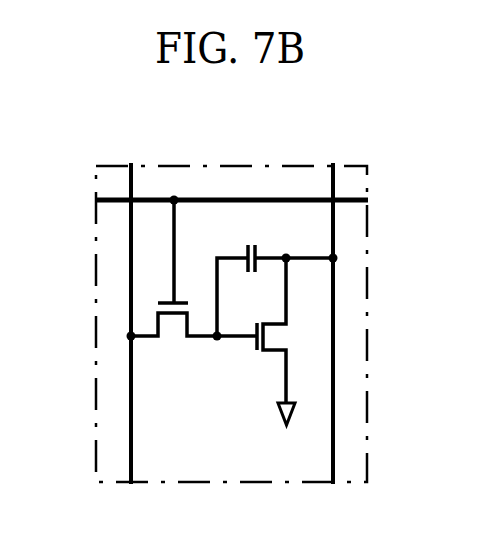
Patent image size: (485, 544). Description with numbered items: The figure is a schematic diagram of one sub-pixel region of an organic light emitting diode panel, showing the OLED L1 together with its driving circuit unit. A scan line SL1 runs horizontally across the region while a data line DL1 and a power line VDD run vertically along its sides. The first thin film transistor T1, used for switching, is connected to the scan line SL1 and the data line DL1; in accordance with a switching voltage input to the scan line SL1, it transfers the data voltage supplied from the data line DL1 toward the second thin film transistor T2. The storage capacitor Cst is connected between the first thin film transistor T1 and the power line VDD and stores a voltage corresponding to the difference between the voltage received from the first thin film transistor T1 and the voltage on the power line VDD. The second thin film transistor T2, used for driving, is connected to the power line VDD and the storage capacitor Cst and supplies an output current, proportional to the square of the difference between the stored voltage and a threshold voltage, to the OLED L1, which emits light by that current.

The data line DL1 is at (130, 307).
The power line VDD is at (333, 309).
The scan line SL1 is at (210, 202).
The storage capacitor Cst is at (275, 277).
The first thin film transistor T1 is at (174, 282).
The second thin film transistor T2 is at (267, 330).
The OLED L1 is at (287, 428).